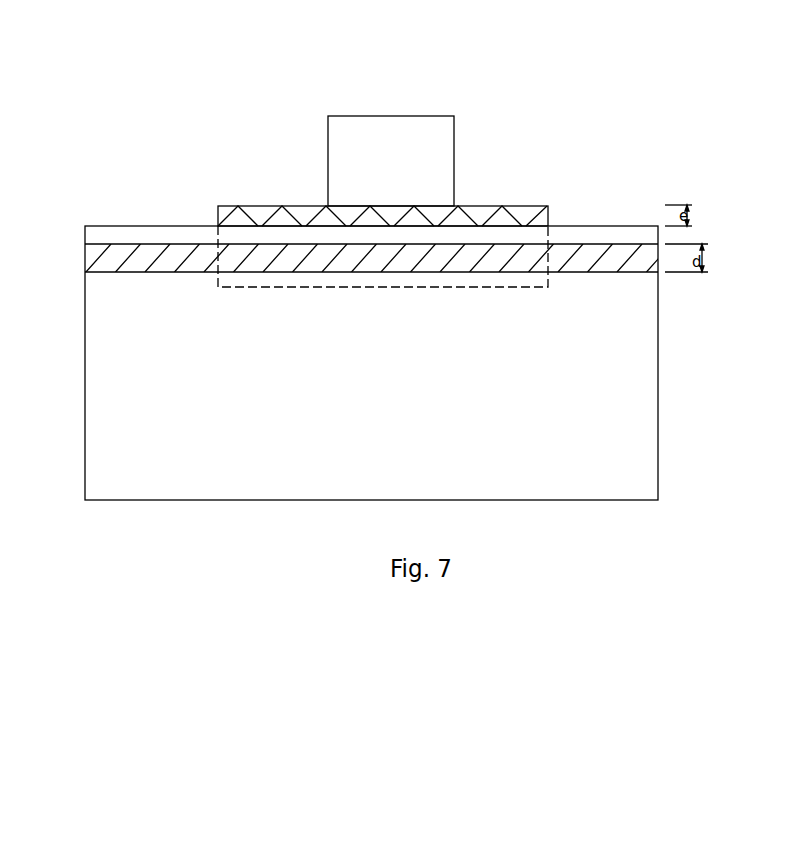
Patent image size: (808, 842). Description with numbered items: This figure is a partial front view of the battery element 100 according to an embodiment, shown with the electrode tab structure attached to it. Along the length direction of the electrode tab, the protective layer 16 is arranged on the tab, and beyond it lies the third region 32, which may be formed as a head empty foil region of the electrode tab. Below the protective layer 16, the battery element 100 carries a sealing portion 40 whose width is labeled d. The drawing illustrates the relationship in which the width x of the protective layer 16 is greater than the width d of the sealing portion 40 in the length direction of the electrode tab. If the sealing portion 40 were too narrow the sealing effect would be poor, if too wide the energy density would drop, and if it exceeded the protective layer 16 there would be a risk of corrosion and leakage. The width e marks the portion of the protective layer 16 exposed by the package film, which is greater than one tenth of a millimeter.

The third region 32 is at (408, 153).
The protective layer 16 is at (518, 215).
The sealing portion 40 is at (615, 259).
The battery element 100 is at (618, 397).